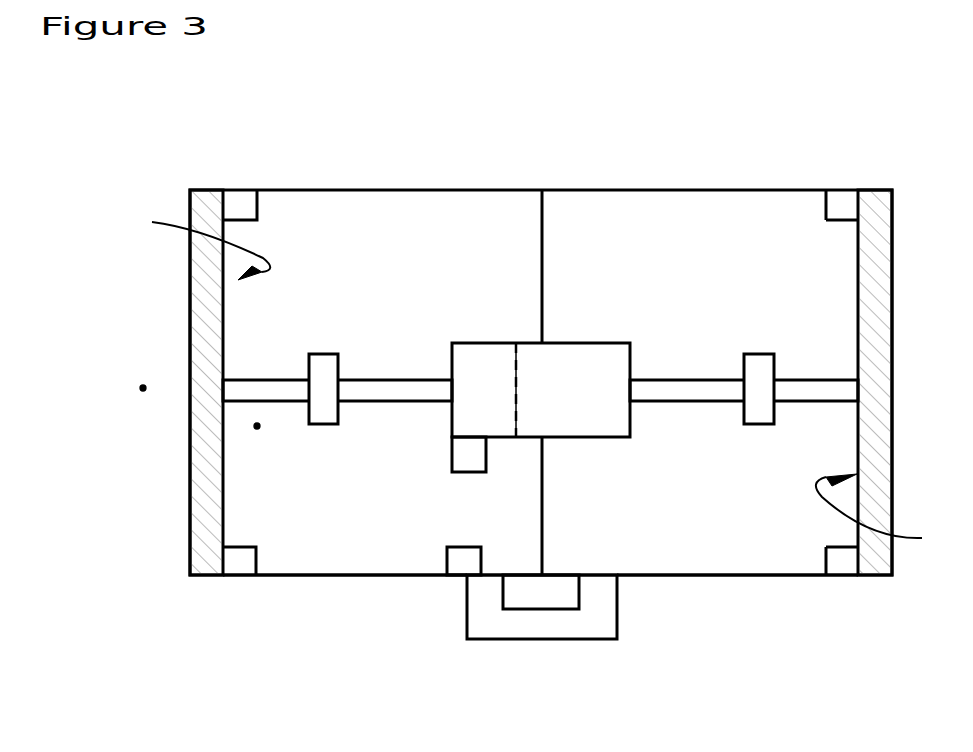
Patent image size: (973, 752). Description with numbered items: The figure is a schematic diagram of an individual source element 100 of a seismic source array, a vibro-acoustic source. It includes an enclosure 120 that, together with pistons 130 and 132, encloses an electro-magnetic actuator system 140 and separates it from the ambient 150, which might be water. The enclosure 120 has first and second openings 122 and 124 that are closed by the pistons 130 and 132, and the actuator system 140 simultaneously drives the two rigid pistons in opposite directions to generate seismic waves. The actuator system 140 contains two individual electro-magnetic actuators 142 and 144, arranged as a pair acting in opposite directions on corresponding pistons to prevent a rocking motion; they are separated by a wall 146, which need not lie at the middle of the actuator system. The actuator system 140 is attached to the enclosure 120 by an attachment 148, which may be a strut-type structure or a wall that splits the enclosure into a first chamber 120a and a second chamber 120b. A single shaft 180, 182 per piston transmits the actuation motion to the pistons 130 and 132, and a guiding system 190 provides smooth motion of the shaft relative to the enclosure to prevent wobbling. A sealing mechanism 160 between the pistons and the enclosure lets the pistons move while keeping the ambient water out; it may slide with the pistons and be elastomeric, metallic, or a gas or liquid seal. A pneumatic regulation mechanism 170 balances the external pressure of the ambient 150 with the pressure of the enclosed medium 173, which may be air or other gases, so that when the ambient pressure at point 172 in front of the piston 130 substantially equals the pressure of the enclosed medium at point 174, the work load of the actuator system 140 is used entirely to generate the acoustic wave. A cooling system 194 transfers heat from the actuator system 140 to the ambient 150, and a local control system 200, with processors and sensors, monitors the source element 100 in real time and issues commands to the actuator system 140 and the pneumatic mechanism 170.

The individual source element 100 is at (565, 71).
The enclosure 120 is at (324, 190).
The first chamber 120a is at (292, 540).
The second chamber 120b is at (742, 552).
The first opening 122 is at (188, 241).
The second opening 124 is at (894, 512).
The piston 130 is at (190, 293).
The piston 132 is at (878, 262).
The electro-magnetic actuator system 140 is at (584, 343).
The electro-magnetic actuator 142 is at (474, 365).
The electro-magnetic actuator 144 is at (600, 365).
The wall 146 is at (516, 360).
The attachment 148 is at (542, 233).
The ambient 150 is at (945, 414).
The sealing mechanism 160 is at (238, 205).
The pneumatic regulation mechanism 170 is at (549, 598).
The point 172 is at (143, 388).
The enclosed medium 173 is at (368, 250).
The point 174 is at (257, 426).
The shaft 180 is at (378, 401).
The shaft 182 is at (695, 401).
The guiding system 190 is at (326, 365).
The cooling system 194 is at (467, 472).
The local control system 200 is at (478, 628).